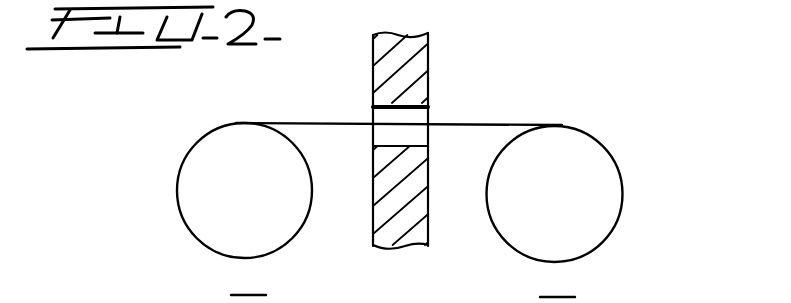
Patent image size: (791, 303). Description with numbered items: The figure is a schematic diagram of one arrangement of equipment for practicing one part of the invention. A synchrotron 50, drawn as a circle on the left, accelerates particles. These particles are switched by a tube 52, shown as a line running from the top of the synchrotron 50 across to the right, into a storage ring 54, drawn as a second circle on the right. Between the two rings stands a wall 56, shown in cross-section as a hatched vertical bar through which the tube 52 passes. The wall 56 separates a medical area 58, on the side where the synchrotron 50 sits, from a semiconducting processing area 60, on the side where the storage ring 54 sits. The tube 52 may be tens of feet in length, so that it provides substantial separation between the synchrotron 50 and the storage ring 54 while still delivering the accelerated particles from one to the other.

The synchrotron 50 is at (203, 245).
The tube 52 is at (324, 122).
The storage ring 54 is at (617, 168).
The wall 56 is at (430, 66).
The medical area 58 is at (248, 282).
The semiconducting processing area 60 is at (557, 283).